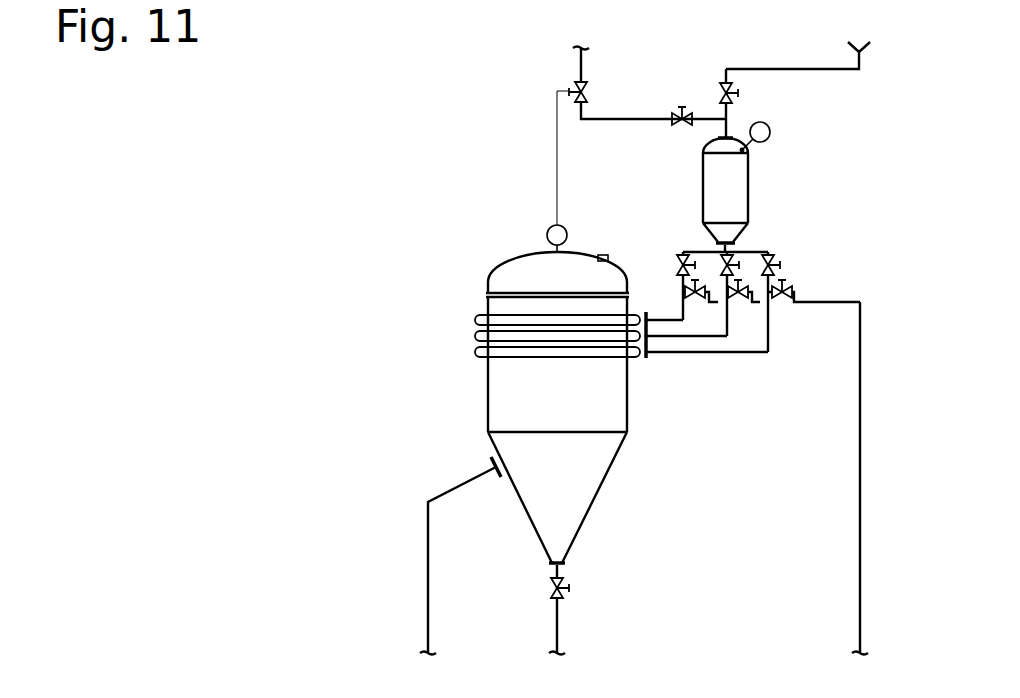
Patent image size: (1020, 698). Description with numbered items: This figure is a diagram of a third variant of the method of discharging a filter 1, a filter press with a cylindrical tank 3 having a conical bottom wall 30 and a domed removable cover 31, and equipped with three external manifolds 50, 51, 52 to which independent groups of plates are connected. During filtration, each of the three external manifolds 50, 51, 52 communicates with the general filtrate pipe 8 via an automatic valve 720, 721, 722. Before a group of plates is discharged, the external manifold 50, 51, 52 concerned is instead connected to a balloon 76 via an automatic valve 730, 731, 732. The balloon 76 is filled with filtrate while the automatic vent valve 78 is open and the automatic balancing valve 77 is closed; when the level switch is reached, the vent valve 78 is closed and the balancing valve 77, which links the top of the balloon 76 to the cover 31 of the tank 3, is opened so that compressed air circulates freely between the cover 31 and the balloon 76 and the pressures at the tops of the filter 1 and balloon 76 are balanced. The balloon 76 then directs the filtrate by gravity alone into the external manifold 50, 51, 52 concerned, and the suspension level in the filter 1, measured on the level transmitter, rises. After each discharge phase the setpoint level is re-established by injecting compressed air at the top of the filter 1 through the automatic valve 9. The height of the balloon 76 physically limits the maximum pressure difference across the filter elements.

The filter 1 is at (417, 231).
The tank 3 is at (512, 407).
The cover 31 is at (505, 280).
The conical bottom wall 30 is at (540, 515).
The first external manifold 50 is at (475, 352).
The second external manifold 51 is at (475, 337).
The third external manifold 52 is at (475, 318).
The automatic valve 9 is at (578, 86).
The automatic balancing valve 77 is at (676, 113).
The automatic vent valve 78 is at (722, 86).
The balloon 76 is at (732, 190).
The automatic valve 730 is at (683, 256).
The automatic valve 731 is at (731, 258).
The automatic valve 732 is at (772, 258).
The automatic valve 720 is at (693, 296).
The automatic valve 721 is at (740, 297).
The automatic valve 722 is at (778, 297).
The general filtrate pipe 8 is at (860, 598).